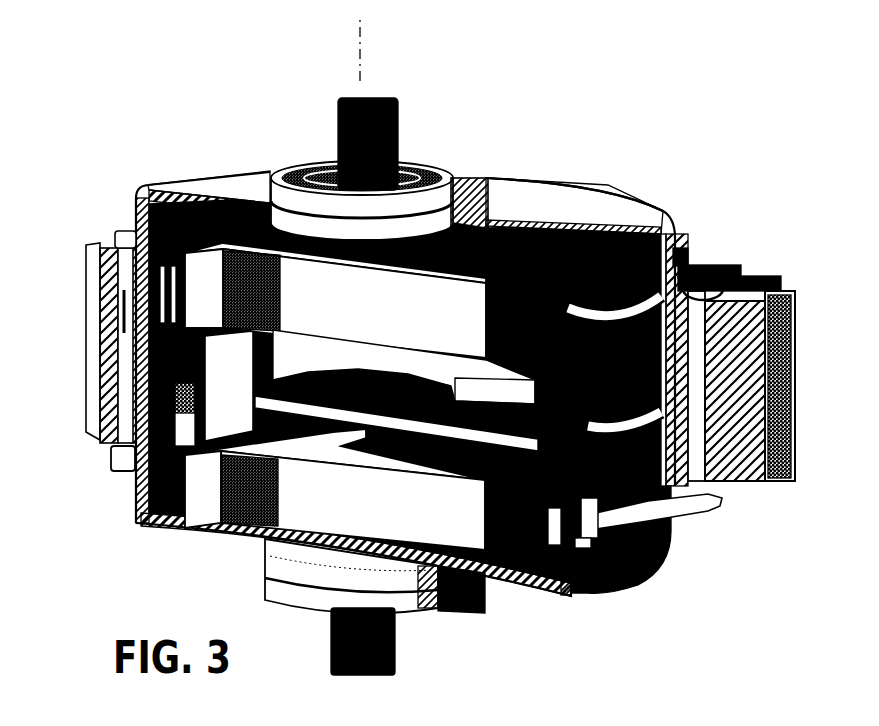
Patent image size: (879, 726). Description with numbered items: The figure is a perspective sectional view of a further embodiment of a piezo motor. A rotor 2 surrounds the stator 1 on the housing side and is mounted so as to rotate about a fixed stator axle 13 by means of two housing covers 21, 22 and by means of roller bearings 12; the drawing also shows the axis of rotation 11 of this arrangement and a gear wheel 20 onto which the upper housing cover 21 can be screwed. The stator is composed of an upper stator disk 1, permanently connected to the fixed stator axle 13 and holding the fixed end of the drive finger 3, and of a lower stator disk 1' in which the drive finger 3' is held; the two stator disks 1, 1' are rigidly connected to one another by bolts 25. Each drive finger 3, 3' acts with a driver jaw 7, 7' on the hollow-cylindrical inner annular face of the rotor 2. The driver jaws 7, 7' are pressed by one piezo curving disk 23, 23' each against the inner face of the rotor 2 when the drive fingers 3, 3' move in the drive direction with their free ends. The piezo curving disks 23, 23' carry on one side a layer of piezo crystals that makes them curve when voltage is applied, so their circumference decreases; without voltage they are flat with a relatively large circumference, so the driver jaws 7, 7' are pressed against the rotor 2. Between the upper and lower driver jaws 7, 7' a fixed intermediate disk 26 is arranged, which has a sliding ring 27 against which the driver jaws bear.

The stator disk 1 is at (384, 354).
The lower stator disk 1' is at (101, 477).
The rotor 2 is at (725, 258).
The drive finger 3 is at (356, 301).
The drive finger 3' is at (351, 491).
The driver jaw 7 is at (727, 326).
The driver jaw 7' is at (589, 568).
The axis 11 is at (352, 45).
The roller bearing 12 is at (262, 192).
The stator axle 13 is at (392, 115).
The gear wheel 20 is at (790, 447).
The upper housing cover 21 is at (597, 197).
The housing cover 22 is at (523, 583).
The piezo curving disk 23 is at (580, 239).
The piezo curving disk 23' is at (502, 561).
The bolt 25 is at (213, 397).
The intermediate disk 26 is at (445, 378).
The sliding ring 27 is at (165, 345).